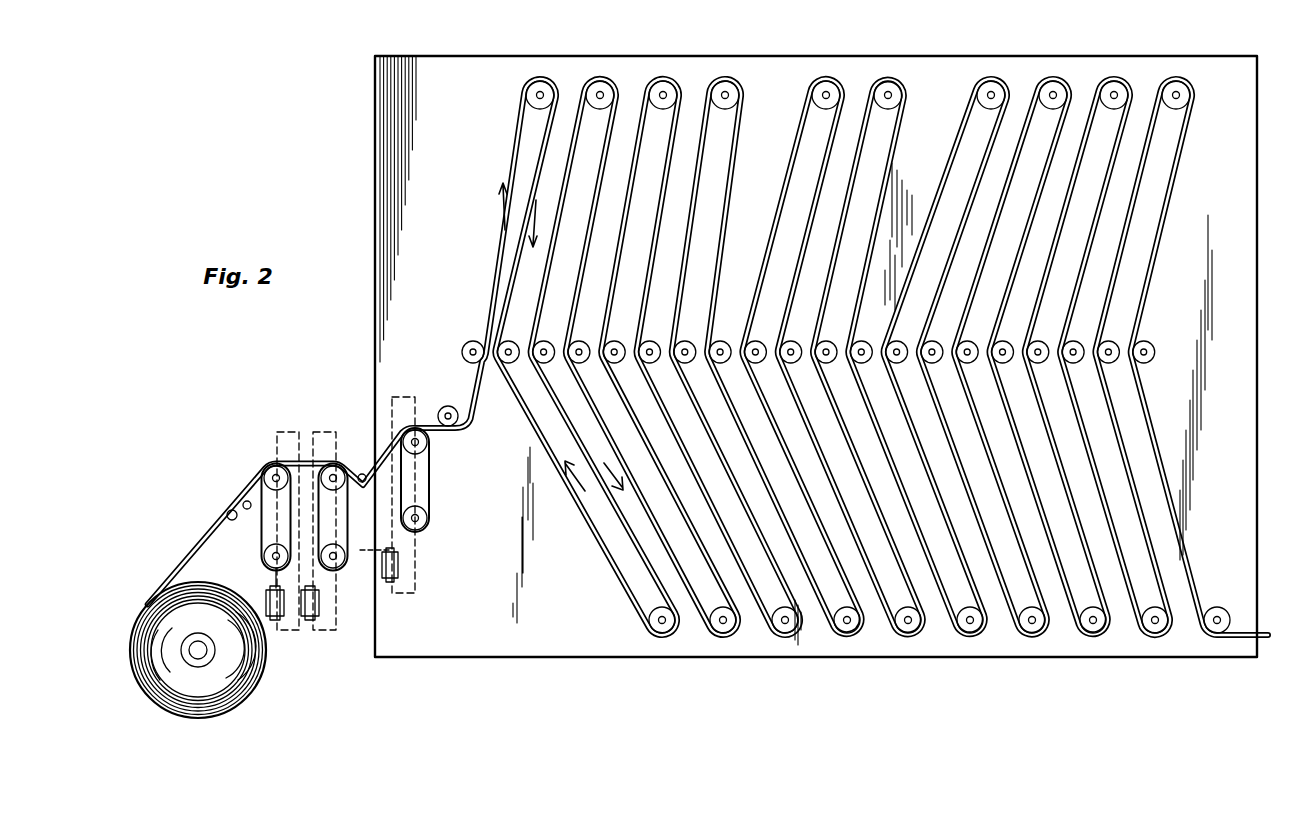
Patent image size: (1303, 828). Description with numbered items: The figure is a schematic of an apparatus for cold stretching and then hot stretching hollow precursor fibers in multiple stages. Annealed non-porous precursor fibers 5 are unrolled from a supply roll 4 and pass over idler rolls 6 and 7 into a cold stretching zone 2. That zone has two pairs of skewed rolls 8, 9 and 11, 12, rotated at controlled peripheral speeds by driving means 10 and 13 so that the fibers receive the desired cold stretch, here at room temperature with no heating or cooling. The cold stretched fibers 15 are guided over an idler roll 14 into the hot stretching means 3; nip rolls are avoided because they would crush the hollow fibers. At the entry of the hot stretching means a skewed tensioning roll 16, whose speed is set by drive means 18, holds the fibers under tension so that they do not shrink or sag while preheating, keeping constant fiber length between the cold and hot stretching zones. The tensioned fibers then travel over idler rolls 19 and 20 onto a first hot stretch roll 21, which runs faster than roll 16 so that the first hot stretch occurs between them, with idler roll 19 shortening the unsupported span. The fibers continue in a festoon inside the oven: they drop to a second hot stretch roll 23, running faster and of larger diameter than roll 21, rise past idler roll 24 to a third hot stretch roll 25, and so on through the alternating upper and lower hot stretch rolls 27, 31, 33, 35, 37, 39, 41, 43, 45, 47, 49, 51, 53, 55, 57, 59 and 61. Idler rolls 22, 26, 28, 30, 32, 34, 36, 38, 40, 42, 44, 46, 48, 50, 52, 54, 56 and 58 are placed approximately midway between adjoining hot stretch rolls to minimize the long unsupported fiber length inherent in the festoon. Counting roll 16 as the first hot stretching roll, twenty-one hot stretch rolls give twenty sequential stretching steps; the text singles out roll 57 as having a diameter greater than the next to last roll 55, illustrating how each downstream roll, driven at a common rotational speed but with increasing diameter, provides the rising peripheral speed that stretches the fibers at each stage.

The cold stretching zone 2 is at (320, 417).
The hot stretching means 3 is at (347, 160).
The supply roll 4 is at (248, 684).
The non-porous precursor fibers 5 is at (192, 551).
The idler roll 6 is at (227, 513).
The idler roll 7 is at (243, 503).
The skewed roll 8 is at (268, 470).
The skewed roll 9 is at (266, 560).
The driving means 10 is at (280, 618).
The skewed roll 11 is at (338, 488).
The skewed roll 12 is at (338, 566).
The driving means 13 is at (312, 618).
The idler roll 14 is at (354, 460).
The cold stretched fibers 15 is at (386, 465).
The skewed tensioning roll 16 is at (427, 447).
The drive means 18 is at (392, 582).
The idler roll 19 is at (443, 396).
The idler roll 20 is at (461, 331).
The first hot stretch roll 21 is at (537, 82).
The intermediate roller 22 is at (510, 341).
The second hot stretch roll 23 is at (664, 636).
The idler roll 24 is at (546, 341).
The third hot stretch roll 25 is at (597, 82).
The intermediate roller 26 is at (583, 362).
The lower roller 27 is at (726, 636).
The intermediate roller 28 is at (618, 362).
The intermediate roller 30 is at (651, 341).
The upper roller 31 is at (660, 82).
The intermediate roller 32 is at (689, 362).
The lower roller 33 is at (788, 636).
The intermediate roller 34 is at (722, 341).
The upper roller 35 is at (722, 82).
The intermediate roller 36 is at (760, 362).
The lower roller 37 is at (850, 636).
The intermediate roller 38 is at (794, 341).
The upper roller 39 is at (824, 82).
The intermediate roller 40 is at (829, 341).
The lower roller 41 is at (911, 636).
The intermediate roller 42 is at (865, 362).
The upper roller 43 is at (888, 82).
The intermediate roller 44 is at (900, 341).
The lower roller 45 is at (973, 636).
The intermediate roller 46 is at (935, 341).
The upper roller 47 is at (997, 83).
The intermediate roller 48 is at (971, 362).
The lower roller 49 is at (1035, 636).
The intermediate roller 50 is at (1006, 341).
The upper roller 51 is at (1063, 86).
The intermediate roller 52 is at (1041, 362).
The lower roller 53 is at (1096, 636).
The intermediate roller 54 is at (1076, 362).
The next to last downstream hot stretch roll 55 is at (1124, 86).
The intermediate roller 56 is at (1111, 341).
The downstream most hot stretch roll 57 is at (1158, 636).
The intermediate roller 58 is at (1149, 343).
The upper roller 59 is at (1186, 86).
The lower roller 61 is at (1219, 640).